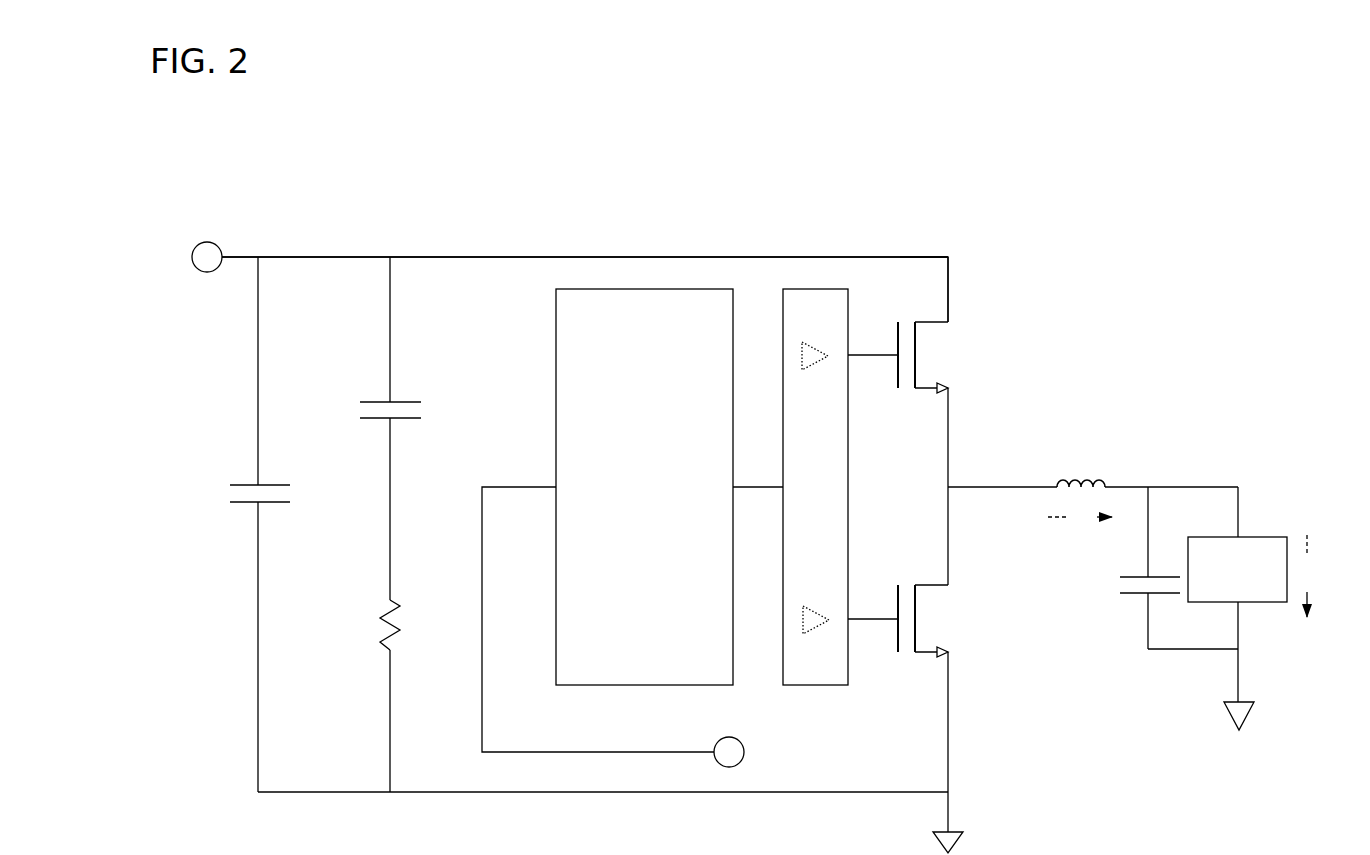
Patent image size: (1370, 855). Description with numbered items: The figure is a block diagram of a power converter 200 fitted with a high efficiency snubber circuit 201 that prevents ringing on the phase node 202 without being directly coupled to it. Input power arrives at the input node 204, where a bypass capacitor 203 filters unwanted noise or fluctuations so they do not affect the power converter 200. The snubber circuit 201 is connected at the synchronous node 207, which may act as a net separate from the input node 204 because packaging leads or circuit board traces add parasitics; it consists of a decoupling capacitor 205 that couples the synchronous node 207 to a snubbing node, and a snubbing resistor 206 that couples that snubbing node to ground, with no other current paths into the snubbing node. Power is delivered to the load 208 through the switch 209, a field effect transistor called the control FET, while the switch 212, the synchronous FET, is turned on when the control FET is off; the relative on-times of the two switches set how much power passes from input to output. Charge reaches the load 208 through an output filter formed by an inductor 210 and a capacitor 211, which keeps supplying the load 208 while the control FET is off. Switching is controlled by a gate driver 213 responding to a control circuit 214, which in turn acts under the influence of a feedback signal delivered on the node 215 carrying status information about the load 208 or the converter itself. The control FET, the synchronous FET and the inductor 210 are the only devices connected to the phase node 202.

The power converter 200 is at (212, 139).
The snubber circuit 201 is at (390, 242).
The phase node 202 is at (939, 504).
The bypass capacitor 203 is at (236, 514).
The input node 204 is at (222, 241).
The decoupling capacitor 205 is at (408, 389).
The snubbing resistor 206 is at (372, 636).
The synchronous node 207 is at (933, 244).
The load 208 is at (1263, 584).
The switch 209 is at (923, 355).
The inductor 210 is at (1104, 473).
The capacitor 211 is at (1114, 614).
The switch 212 is at (932, 619).
The gate driver 213 is at (842, 501).
The control circuit 214 is at (672, 501).
The node 215 is at (748, 738).